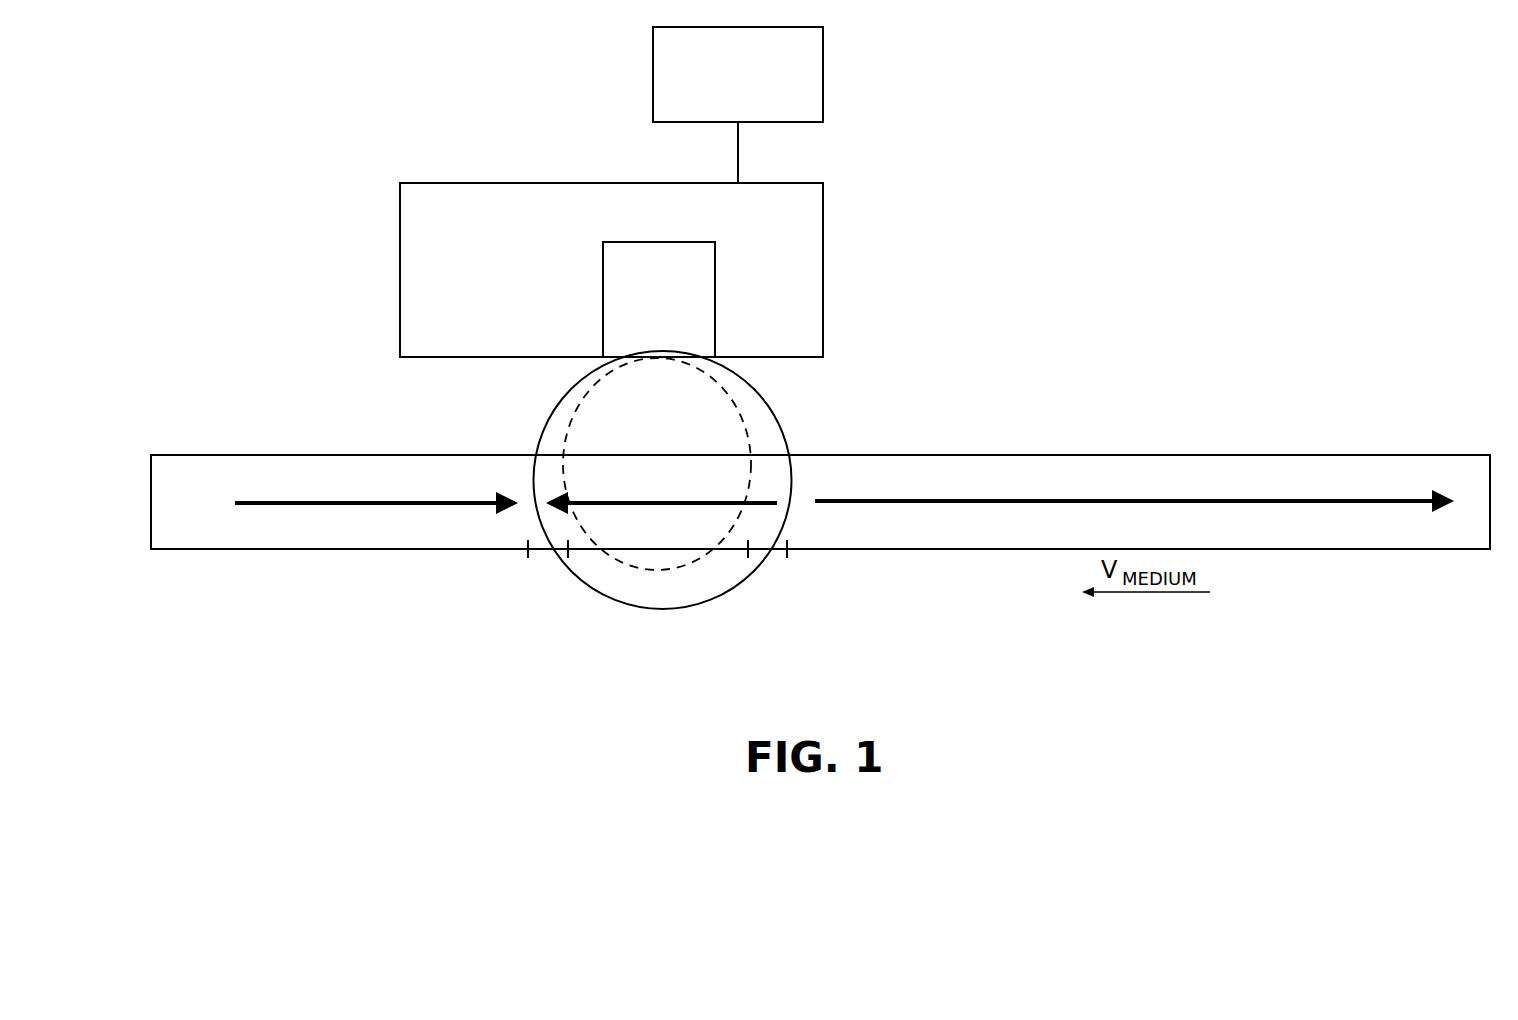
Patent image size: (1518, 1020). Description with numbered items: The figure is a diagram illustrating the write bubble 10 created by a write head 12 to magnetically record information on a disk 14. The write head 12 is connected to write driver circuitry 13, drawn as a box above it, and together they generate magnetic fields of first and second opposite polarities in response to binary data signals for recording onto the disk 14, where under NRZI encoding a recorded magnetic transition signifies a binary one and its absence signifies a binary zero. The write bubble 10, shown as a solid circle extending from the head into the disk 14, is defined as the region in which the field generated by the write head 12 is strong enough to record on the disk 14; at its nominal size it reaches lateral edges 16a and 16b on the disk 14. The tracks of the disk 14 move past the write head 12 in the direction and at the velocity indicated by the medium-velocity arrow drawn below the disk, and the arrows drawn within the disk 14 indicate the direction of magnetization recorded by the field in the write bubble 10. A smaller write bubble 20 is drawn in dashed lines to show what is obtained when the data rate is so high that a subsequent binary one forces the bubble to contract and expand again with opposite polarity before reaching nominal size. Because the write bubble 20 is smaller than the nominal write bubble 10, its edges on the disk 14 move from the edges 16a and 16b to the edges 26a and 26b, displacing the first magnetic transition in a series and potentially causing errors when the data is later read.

The write bubble 10 is at (668, 608).
The write head 12 is at (823, 268).
The write driver circuitry 13 is at (823, 72).
The disk 14 is at (930, 549).
The lateral edge 16a is at (528, 556).
The lateral edge 16b is at (787, 556).
The write bubble 20 is at (643, 570).
The edge 26a is at (568, 556).
The edge 26b is at (748, 556).